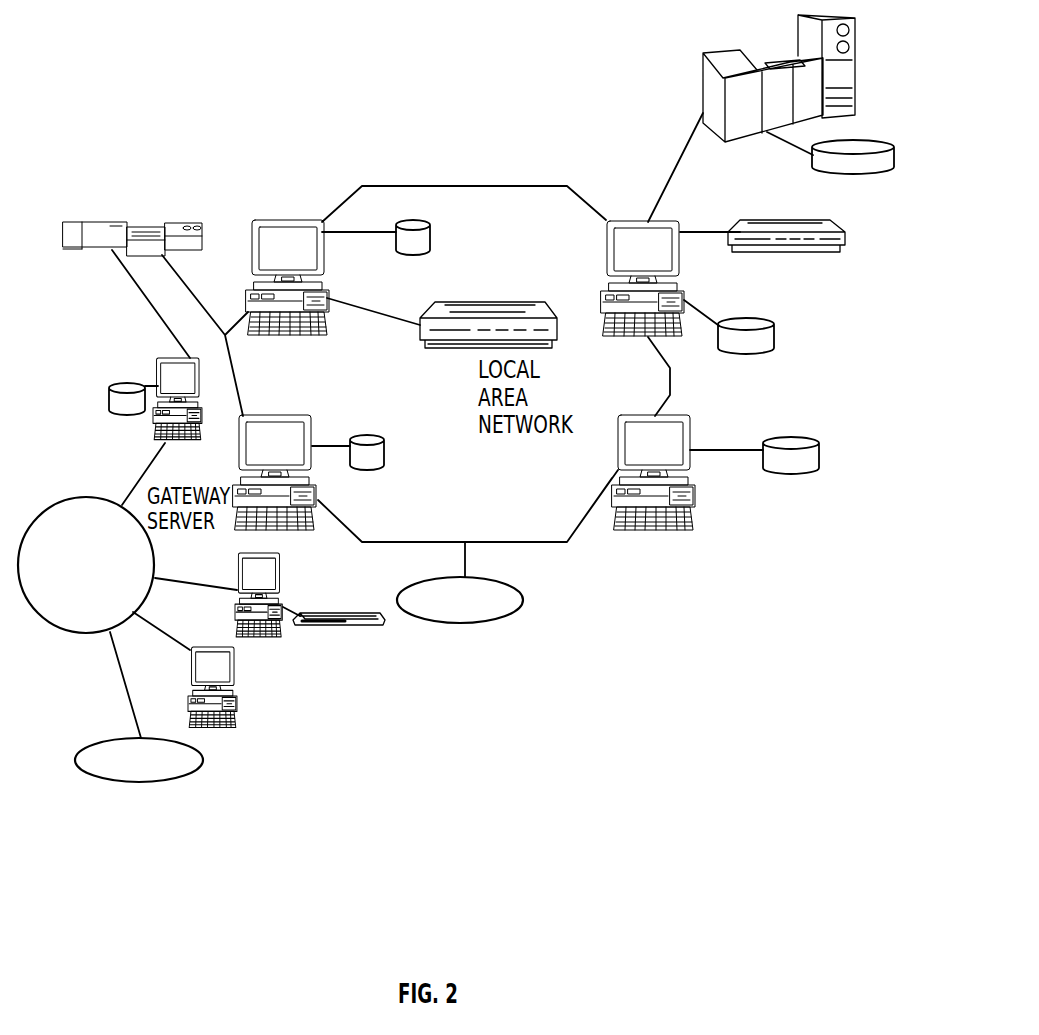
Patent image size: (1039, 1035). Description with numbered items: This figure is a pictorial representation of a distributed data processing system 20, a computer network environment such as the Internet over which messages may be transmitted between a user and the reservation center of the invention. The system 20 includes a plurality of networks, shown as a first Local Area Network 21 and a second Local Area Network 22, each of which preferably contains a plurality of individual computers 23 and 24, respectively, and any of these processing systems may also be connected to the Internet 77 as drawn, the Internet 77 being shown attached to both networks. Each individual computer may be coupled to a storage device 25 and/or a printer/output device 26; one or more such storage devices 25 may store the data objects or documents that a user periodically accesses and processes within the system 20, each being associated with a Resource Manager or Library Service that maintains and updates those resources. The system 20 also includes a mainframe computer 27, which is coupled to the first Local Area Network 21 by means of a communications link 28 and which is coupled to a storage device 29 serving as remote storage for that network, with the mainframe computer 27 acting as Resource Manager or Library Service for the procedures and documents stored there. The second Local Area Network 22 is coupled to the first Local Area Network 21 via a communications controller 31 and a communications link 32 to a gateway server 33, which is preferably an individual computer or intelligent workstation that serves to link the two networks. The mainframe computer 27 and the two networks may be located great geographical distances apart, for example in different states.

The distributed data processing system 20 is at (470, 165).
The Local Area Network 21 is at (567, 542).
The Local Area Network 22 is at (87, 495).
The individual computer 23 is at (278, 222).
The individual computer 24 is at (282, 562).
The storage device 25 is at (432, 240).
The printer/output device 26 is at (488, 305).
The mainframe computer 27 is at (747, 55).
The communications link 28 is at (683, 152).
The storage device 29 is at (840, 147).
The communications controller 31 is at (200, 225).
The communications link 32 is at (146, 297).
The gateway server 33 is at (157, 360).
The Internet 77 is at (523, 600).